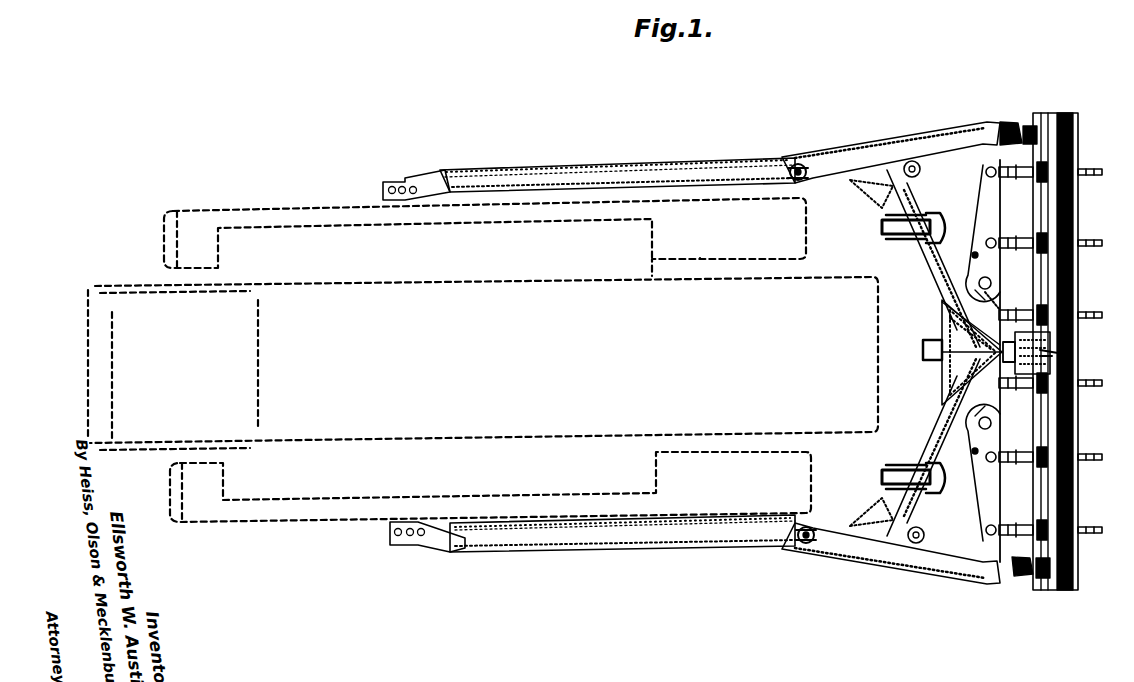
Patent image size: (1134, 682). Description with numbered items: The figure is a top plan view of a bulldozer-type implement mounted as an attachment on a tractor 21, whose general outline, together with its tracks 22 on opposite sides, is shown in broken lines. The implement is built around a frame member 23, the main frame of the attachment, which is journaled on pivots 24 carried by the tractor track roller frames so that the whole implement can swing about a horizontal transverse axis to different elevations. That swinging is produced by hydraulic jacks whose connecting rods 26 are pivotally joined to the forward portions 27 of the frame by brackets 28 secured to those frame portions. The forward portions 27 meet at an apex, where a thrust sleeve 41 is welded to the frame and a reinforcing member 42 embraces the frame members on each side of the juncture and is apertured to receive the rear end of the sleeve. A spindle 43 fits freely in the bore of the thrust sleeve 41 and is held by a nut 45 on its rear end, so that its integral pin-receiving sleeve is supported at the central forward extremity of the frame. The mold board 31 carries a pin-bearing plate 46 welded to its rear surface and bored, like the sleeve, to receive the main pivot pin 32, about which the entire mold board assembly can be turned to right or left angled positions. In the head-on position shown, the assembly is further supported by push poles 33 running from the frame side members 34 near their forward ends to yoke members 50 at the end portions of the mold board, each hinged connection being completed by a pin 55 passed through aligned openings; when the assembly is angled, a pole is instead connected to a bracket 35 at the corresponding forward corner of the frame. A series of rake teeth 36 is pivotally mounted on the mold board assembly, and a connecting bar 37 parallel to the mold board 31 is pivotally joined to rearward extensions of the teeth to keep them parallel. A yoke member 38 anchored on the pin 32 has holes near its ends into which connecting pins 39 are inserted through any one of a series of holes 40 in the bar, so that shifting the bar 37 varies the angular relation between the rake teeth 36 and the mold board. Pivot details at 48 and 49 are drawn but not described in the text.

The tractor 21 is at (278, 206).
The tracks 22 is at (712, 260).
The frame member 23 is at (618, 175).
The pivots 24 is at (388, 180).
The connecting rods 26 is at (880, 228).
The forward portions of the frame 27 is at (926, 270).
The brackets 28 is at (944, 220).
The mold board 31 is at (1068, 124).
The pin 32 is at (1040, 346).
The push poles 33 is at (905, 140).
The frame side members 34 is at (724, 170).
The bracket 35 is at (921, 172).
The rake teeth 36 is at (1102, 242).
The connecting bar 37 is at (1000, 204).
The yoke member 38 is at (998, 300).
The connecting pins 39 is at (979, 285).
The holes 40 is at (973, 252).
The thrust sleeve 41 is at (940, 338).
The reinforcing member 42 is at (946, 372).
The spindle 43 is at (921, 350).
The nut 45 is at (922, 358).
The pin-bearing plate 46 is at (1050, 362).
The pivot bolt 48 is at (803, 168).
The pivot bolt washer 49 is at (797, 165).
The yoke members 50 is at (1032, 126).
The pin 55 is at (1010, 122).